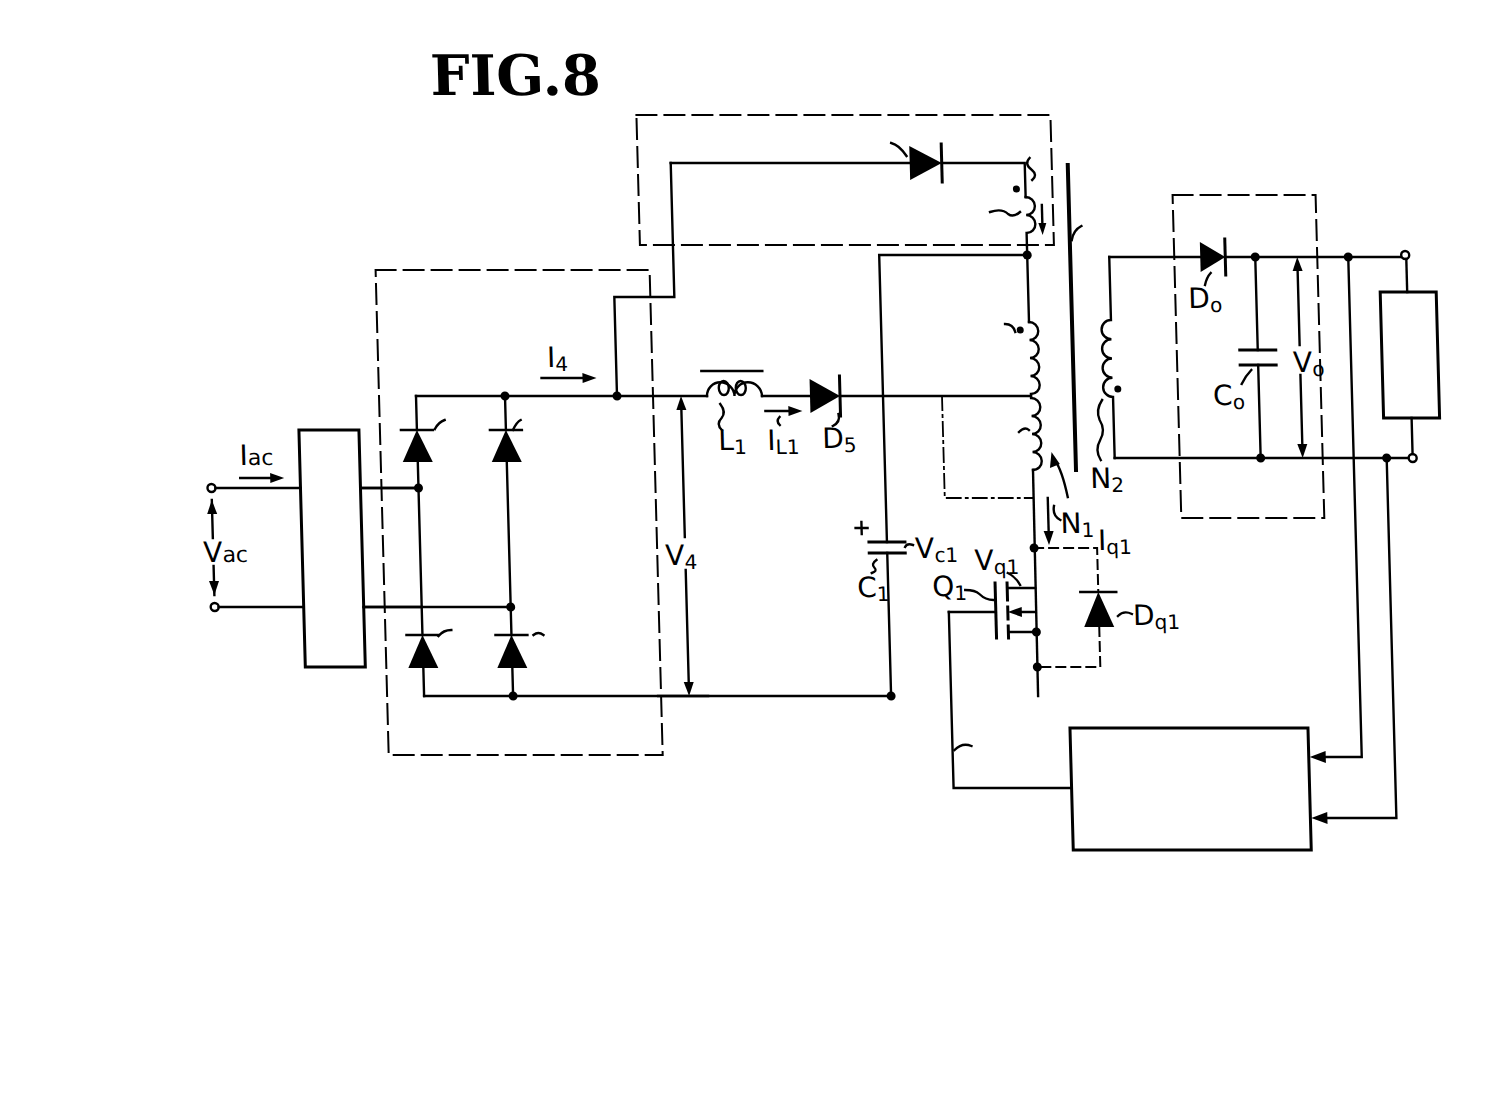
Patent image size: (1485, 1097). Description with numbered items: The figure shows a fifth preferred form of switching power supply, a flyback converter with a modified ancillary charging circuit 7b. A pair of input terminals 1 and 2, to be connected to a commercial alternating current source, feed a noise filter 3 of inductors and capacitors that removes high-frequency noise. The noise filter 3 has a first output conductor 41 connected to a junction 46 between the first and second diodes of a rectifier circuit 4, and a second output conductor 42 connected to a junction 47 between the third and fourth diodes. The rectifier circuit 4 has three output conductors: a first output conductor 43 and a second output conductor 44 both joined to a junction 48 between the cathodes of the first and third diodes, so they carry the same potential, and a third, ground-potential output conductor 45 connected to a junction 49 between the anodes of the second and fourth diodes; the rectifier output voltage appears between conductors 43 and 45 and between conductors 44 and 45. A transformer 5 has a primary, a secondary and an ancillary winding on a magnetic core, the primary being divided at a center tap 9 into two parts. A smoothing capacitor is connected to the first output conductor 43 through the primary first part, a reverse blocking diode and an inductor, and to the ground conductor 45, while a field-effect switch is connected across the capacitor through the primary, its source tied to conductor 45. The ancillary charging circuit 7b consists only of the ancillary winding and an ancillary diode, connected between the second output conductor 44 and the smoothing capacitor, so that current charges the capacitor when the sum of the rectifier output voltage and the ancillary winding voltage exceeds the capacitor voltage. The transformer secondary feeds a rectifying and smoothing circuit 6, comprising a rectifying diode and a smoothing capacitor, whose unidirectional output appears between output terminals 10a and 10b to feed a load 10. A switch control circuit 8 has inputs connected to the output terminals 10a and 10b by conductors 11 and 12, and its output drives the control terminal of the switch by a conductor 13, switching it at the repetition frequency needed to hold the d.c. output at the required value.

The input terminal 1 is at (212, 484).
The input terminal 2 is at (210, 612).
The noise filter 3 is at (320, 430).
The rectifier circuit 4 is at (423, 270).
The transformer 5 is at (1090, 168).
The rectifying and smoothing circuit 6 is at (1242, 195).
The ancillary charging circuit 7b is at (642, 184).
The switch control circuit 8 is at (1191, 727).
The center tap 9 is at (1019, 392).
The load 10 is at (1396, 290).
The output terminal 10a is at (1409, 251).
The output terminal 10b is at (1411, 462).
The conductor 11 is at (1350, 684).
The conductor 12 is at (1386, 690).
The conductor 13 is at (943, 743).
The first output conductor 41 is at (379, 486).
The second output conductor 42 is at (366, 615).
The first output conductor 43 is at (657, 395).
The second output conductor 44 is at (663, 300).
The third output conductor 45 is at (647, 699).
The junction 46 is at (419, 491).
The junction 47 is at (503, 604).
The junction 48 is at (506, 393).
The junction 49 is at (506, 700).